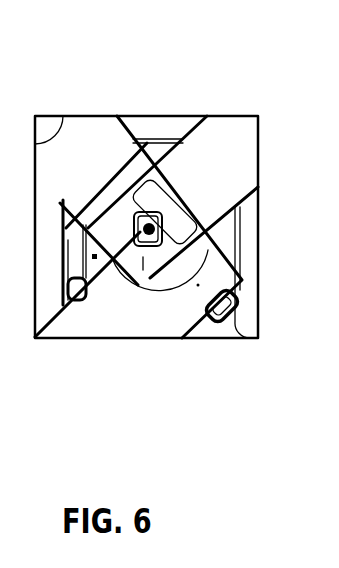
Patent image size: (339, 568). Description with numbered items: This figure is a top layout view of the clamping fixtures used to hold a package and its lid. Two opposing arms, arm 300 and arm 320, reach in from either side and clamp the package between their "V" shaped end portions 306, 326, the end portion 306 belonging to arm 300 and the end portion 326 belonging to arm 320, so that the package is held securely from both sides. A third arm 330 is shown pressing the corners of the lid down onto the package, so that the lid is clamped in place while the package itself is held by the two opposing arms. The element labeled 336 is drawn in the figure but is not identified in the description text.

The arm 300 is at (95, 146).
The arm 330 is at (219, 157).
The rod 336 is at (233, 233).
The V shaped end portion 306 is at (138, 237).
The arm 320 is at (104, 323).
The V shaped end portion 326 is at (232, 328).